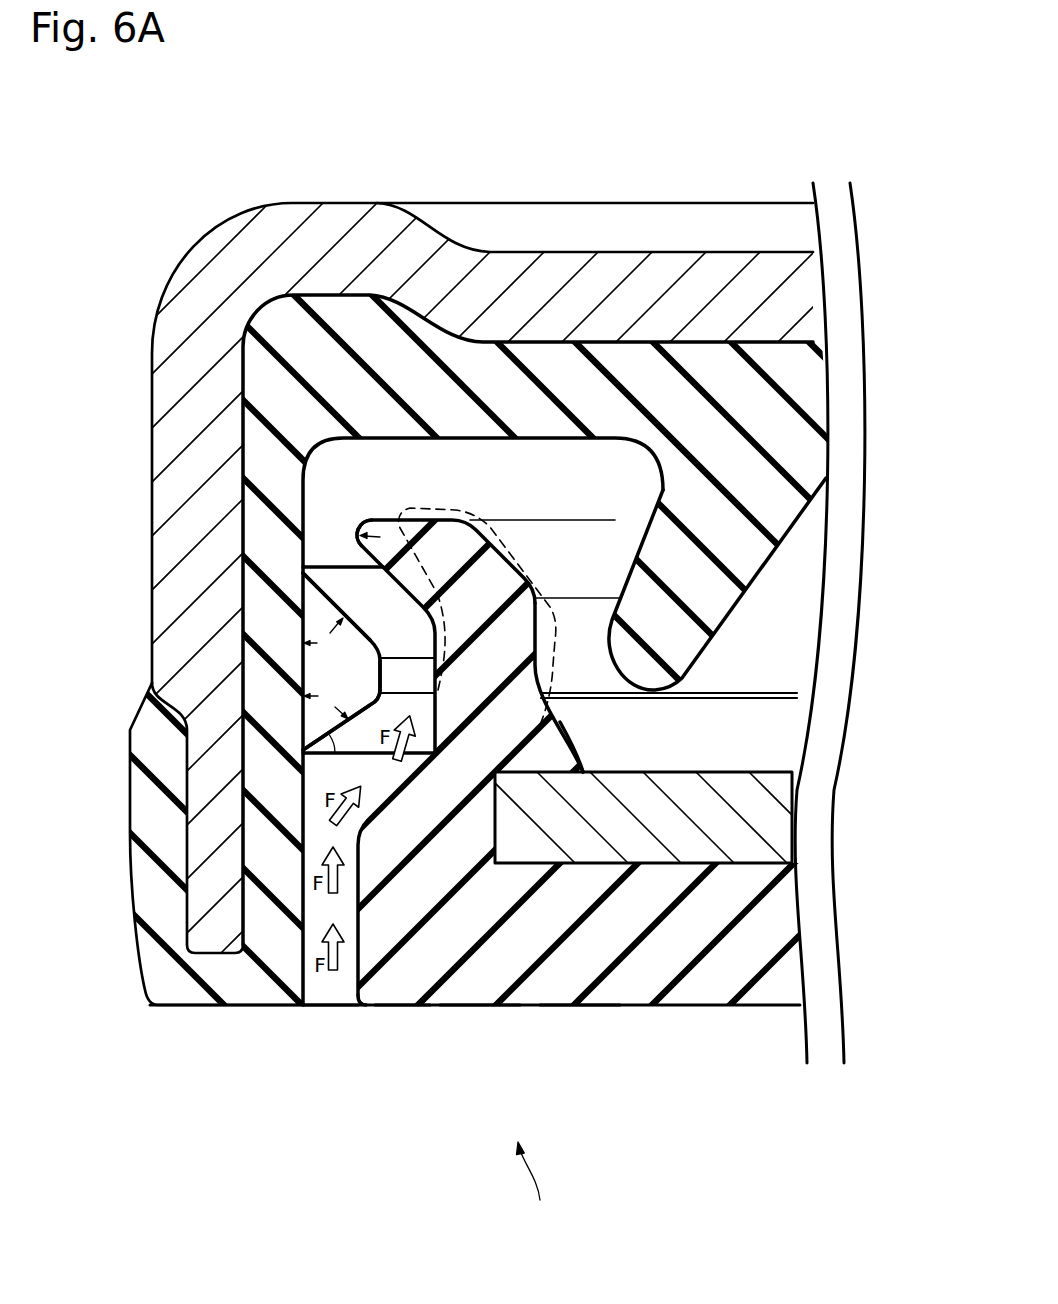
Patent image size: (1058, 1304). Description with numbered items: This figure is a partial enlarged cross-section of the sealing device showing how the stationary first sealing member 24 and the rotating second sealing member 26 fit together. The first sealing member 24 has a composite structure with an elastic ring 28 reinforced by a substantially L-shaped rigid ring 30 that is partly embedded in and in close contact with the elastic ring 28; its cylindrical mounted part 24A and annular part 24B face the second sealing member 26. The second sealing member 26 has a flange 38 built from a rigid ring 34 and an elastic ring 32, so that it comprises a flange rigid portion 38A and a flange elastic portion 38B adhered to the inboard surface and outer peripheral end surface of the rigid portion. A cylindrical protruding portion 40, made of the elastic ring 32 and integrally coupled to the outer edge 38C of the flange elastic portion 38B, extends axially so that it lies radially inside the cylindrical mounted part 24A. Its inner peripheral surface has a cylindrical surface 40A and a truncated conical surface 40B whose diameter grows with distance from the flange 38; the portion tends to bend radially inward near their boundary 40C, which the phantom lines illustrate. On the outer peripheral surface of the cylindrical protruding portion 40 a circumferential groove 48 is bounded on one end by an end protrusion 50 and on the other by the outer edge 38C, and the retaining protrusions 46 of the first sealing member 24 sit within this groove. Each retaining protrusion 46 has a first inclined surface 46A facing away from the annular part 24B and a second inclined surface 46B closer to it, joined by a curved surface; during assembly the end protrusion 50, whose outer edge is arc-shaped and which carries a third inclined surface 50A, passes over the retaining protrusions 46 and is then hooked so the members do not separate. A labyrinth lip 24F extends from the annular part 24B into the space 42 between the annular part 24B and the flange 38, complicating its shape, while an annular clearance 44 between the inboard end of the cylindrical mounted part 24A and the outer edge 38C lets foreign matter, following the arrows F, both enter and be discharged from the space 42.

The first sealing member 24 is at (489, 167).
The cylindrical mounted part 24A is at (163, 973).
The annular part 24B is at (580, 262).
The annular lip 24F is at (737, 603).
The second sealing member 26 is at (535, 1188).
The elastic ring 28 is at (258, 437).
The rigid ring 30 is at (162, 366).
The elastic ring 32 is at (680, 990).
The rigid ring 34 is at (747, 827).
The flange 38 is at (633, 992).
The flange rigid portion 38A is at (560, 853).
The flange elastic portion 38B is at (483, 1003).
The outer edge 38C is at (407, 1003).
The cylindrical protruding portion 40 is at (532, 714).
The cylindrical surface 40A is at (545, 685).
The truncated conical surface 40B is at (576, 753).
The boundary 40C is at (540, 697).
The space 42 is at (723, 752).
The annular clearance 44 is at (327, 995).
The retaining protrusions 46 is at (315, 662).
The first inclined surface 46A is at (322, 740).
The second inclined surface 46B is at (353, 625).
The circumferential groove 48 is at (378, 668).
The end protrusion 50 is at (366, 552).
The third inclined surface 50A is at (357, 530).